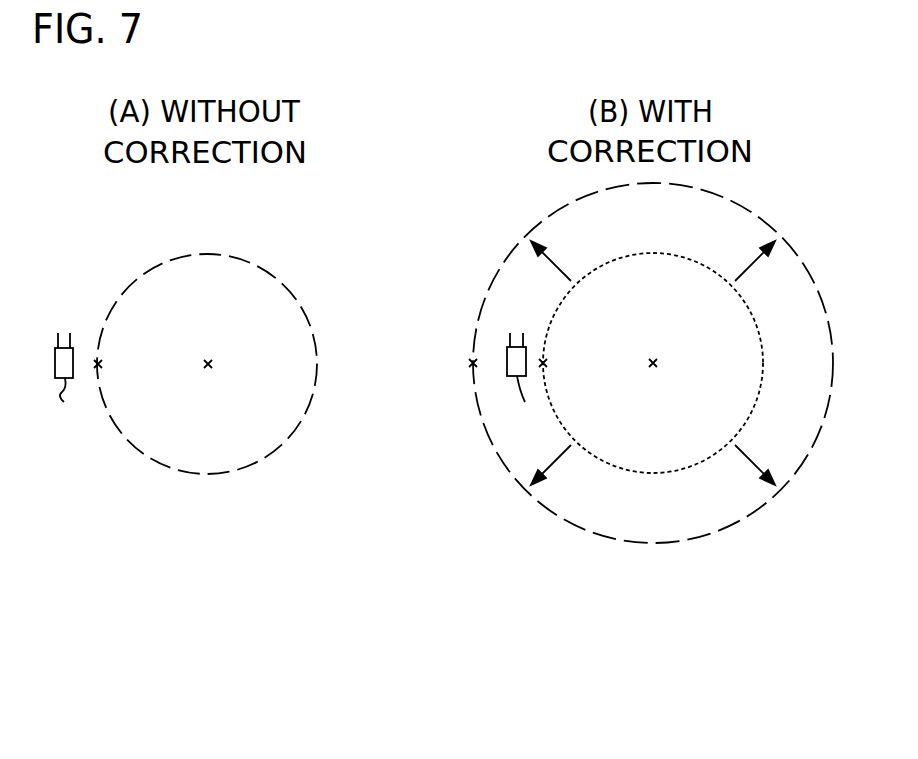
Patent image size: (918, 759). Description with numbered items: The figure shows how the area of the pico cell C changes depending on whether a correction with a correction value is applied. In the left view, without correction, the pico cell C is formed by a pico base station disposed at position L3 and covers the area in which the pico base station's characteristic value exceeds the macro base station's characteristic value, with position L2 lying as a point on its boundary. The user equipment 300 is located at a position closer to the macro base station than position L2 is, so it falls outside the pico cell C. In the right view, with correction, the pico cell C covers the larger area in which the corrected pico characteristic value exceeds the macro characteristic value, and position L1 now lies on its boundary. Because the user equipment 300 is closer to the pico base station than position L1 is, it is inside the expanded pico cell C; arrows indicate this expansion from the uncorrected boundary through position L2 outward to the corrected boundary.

The user equipment 300 is at (295, 397).
The position L1 is at (473, 363).
The position L2 is at (98, 364).
The position L3 is at (208, 364).
The pico cell C is at (212, 477).